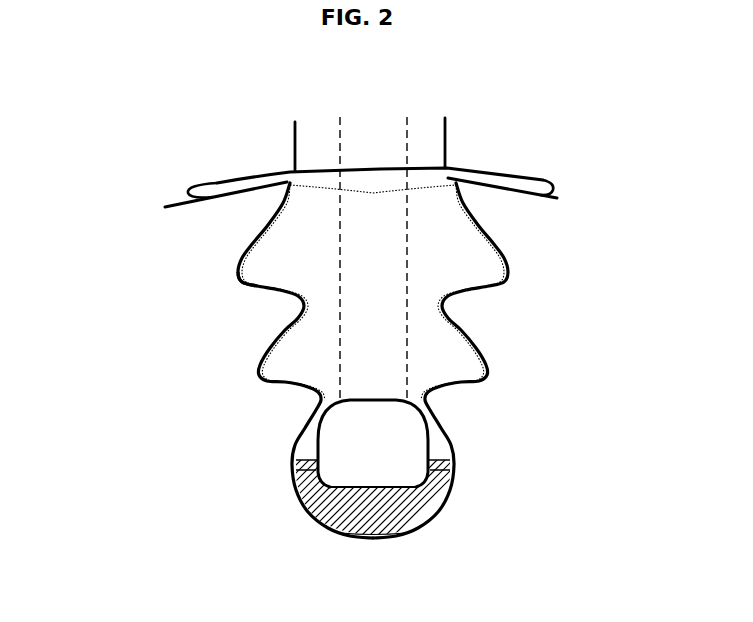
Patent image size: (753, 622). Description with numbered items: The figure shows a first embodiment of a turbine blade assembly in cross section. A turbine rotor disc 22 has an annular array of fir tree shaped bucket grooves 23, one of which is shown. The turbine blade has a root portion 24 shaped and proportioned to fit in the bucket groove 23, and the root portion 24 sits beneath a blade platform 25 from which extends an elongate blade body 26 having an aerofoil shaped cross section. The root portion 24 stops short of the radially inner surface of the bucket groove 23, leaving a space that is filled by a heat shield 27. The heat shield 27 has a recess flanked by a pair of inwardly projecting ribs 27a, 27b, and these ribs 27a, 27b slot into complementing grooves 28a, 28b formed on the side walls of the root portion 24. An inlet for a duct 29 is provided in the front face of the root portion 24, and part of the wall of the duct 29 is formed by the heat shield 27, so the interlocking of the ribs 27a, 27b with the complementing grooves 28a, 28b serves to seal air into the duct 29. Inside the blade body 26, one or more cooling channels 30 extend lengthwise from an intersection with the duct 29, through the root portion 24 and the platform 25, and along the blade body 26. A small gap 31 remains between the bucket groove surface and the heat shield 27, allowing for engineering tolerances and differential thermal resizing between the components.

The turbine rotor disc 22 is at (187, 215).
The bucket groove 23 is at (482, 363).
The root portion 24 is at (448, 230).
The blade platform 25 is at (213, 182).
The blade body 26 is at (310, 130).
The heat shield 27 is at (360, 517).
The inwardly projecting rib 27a is at (450, 477).
The inwardly projecting rib 27b is at (293, 477).
The complementing groove 28a is at (453, 457).
The complementing groove 28b is at (310, 460).
The duct 29 is at (330, 427).
The cooling channel 30 is at (385, 141).
The gap 31 is at (430, 518).